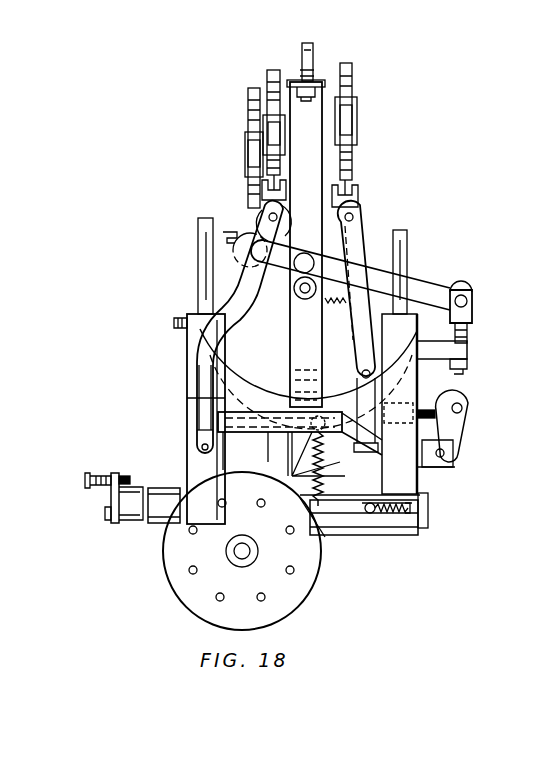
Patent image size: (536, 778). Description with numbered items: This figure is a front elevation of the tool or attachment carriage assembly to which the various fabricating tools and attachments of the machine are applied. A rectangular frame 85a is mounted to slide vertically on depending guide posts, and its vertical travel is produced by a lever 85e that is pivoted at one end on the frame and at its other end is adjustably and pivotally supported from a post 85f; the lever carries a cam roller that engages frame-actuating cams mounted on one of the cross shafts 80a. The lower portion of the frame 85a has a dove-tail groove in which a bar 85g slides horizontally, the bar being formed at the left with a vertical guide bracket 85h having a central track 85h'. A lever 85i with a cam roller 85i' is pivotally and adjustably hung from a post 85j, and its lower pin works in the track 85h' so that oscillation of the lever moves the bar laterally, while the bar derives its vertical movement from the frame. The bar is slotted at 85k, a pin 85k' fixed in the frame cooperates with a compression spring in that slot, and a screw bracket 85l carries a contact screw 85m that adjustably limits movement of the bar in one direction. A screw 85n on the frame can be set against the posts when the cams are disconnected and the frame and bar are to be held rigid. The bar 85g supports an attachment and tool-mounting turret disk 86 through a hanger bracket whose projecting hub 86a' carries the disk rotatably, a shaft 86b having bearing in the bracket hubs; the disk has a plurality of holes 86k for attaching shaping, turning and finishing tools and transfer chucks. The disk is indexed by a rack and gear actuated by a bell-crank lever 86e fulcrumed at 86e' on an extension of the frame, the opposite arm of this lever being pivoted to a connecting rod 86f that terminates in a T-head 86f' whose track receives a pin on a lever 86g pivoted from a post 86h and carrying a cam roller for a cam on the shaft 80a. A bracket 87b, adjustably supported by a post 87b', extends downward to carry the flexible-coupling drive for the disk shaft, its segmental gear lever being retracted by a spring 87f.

The bracket 87b is at (307, 243).
The post 87b' is at (339, 44).
The post 85j is at (278, 70).
The post 85f is at (250, 90).
The post 86h is at (352, 70).
The cam roller 85i' is at (209, 327).
The lever 85i is at (160, 388).
The frame 85a is at (198, 330).
The screw 85n is at (178, 318).
The lever 85e is at (432, 290).
The cross shaft 80a is at (300, 293).
The spring 87f is at (333, 304).
The lever 86g is at (366, 236).
The vertical guide bracket 85h is at (298, 444).
The bar 85g is at (430, 510).
The slot 85k is at (364, 535).
The pin 85k' is at (415, 539).
The turret disk 86 is at (177, 601).
The hub portion 86a' is at (171, 558).
The shaft 86b is at (228, 557).
The holes 86k is at (217, 601).
The screw bracket 85l is at (115, 473).
The contact screw 85m is at (95, 476).
The track 85h' is at (173, 488).
The connecting rod 86f is at (447, 404).
The T-head 86f' is at (401, 286).
The bell-crank lever 86e is at (466, 426).
The fulcrum 86e' is at (470, 450).